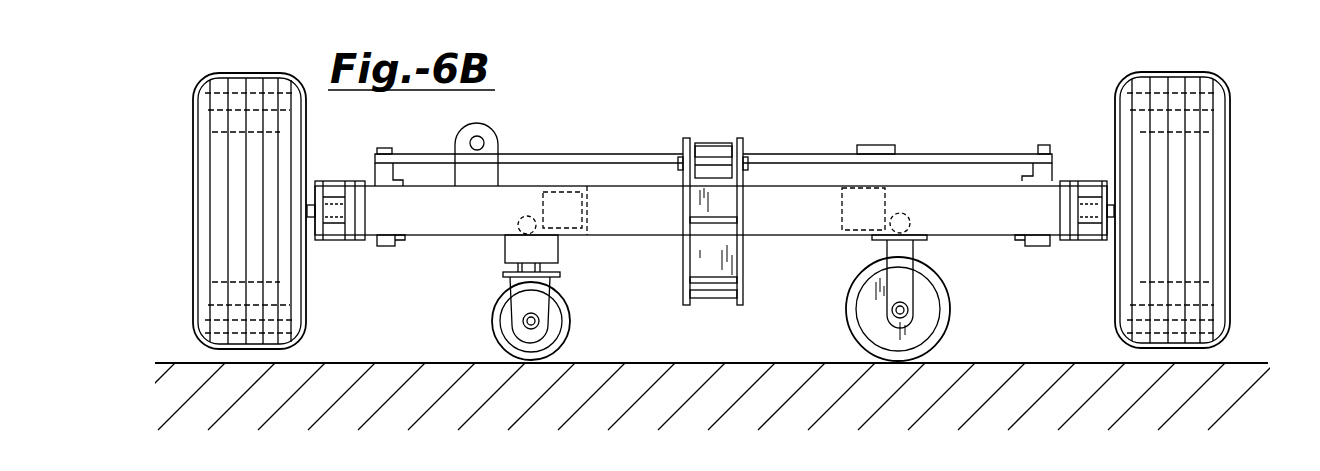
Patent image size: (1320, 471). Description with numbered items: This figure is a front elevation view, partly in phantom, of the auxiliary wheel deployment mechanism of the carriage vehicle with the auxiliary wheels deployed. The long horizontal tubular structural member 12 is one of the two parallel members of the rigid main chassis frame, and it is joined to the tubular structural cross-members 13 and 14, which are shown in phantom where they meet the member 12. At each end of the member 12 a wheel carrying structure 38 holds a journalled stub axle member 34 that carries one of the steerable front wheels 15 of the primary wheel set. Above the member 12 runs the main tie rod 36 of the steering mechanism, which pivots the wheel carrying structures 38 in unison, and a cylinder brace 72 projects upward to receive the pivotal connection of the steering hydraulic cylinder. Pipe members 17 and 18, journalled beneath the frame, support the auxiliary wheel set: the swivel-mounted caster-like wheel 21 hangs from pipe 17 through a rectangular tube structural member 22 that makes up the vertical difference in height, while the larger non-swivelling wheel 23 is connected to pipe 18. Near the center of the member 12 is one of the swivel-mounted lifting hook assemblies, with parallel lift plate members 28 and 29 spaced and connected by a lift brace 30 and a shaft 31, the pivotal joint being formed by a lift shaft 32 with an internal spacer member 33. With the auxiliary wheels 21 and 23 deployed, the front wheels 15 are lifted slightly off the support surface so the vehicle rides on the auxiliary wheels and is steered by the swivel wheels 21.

The tubular structural member 12 is at (633, 212).
The tubular structural cross-member 13 is at (588, 205).
The tubular structural cross-member 14 is at (838, 217).
The steerable front wheel 15 is at (192, 215).
The pipe member 17 is at (527, 215).
The pipe member 18 is at (908, 216).
The swivel-mounted wheel 21 is at (492, 338).
The rectangular tube structural member 22 is at (503, 243).
The wheel 23 is at (952, 298).
The lift plate member 28 is at (745, 258).
The lift plate member 29 is at (682, 258).
The lift brace 30 is at (713, 217).
The shaft 31 is at (700, 298).
The lift shaft 32 is at (680, 167).
The internal spacer member 33 is at (708, 157).
The stub axle member 34 is at (334, 221).
The main tie rod 36 is at (787, 152).
The wheel carrying structure 38 is at (362, 178).
The cylinder brace 72 is at (482, 125).